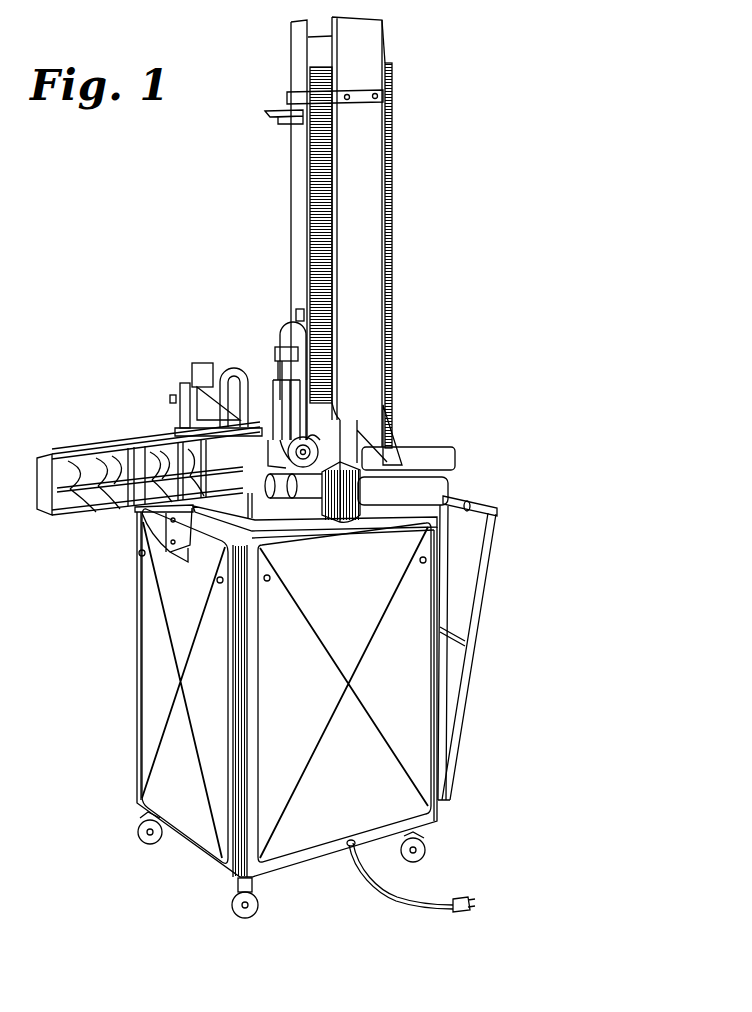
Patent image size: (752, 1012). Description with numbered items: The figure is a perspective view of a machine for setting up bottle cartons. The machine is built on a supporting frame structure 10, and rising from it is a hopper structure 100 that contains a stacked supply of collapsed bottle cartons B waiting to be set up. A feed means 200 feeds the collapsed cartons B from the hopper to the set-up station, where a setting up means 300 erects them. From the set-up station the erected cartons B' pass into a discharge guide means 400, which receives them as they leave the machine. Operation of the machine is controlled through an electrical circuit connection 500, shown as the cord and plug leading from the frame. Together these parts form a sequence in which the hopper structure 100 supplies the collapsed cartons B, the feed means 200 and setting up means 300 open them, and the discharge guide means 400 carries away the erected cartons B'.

The supporting frame structure 10 is at (137, 651).
The hopper structure 100 is at (297, 181).
The feed means 200 is at (265, 377).
The setting up means 300 is at (196, 362).
The discharge guide means 400 is at (62, 450).
The electrical circuit connection 500 is at (392, 898).
The collapsed bottle cartons B is at (410, 234).
The erected cartons B' is at (156, 431).